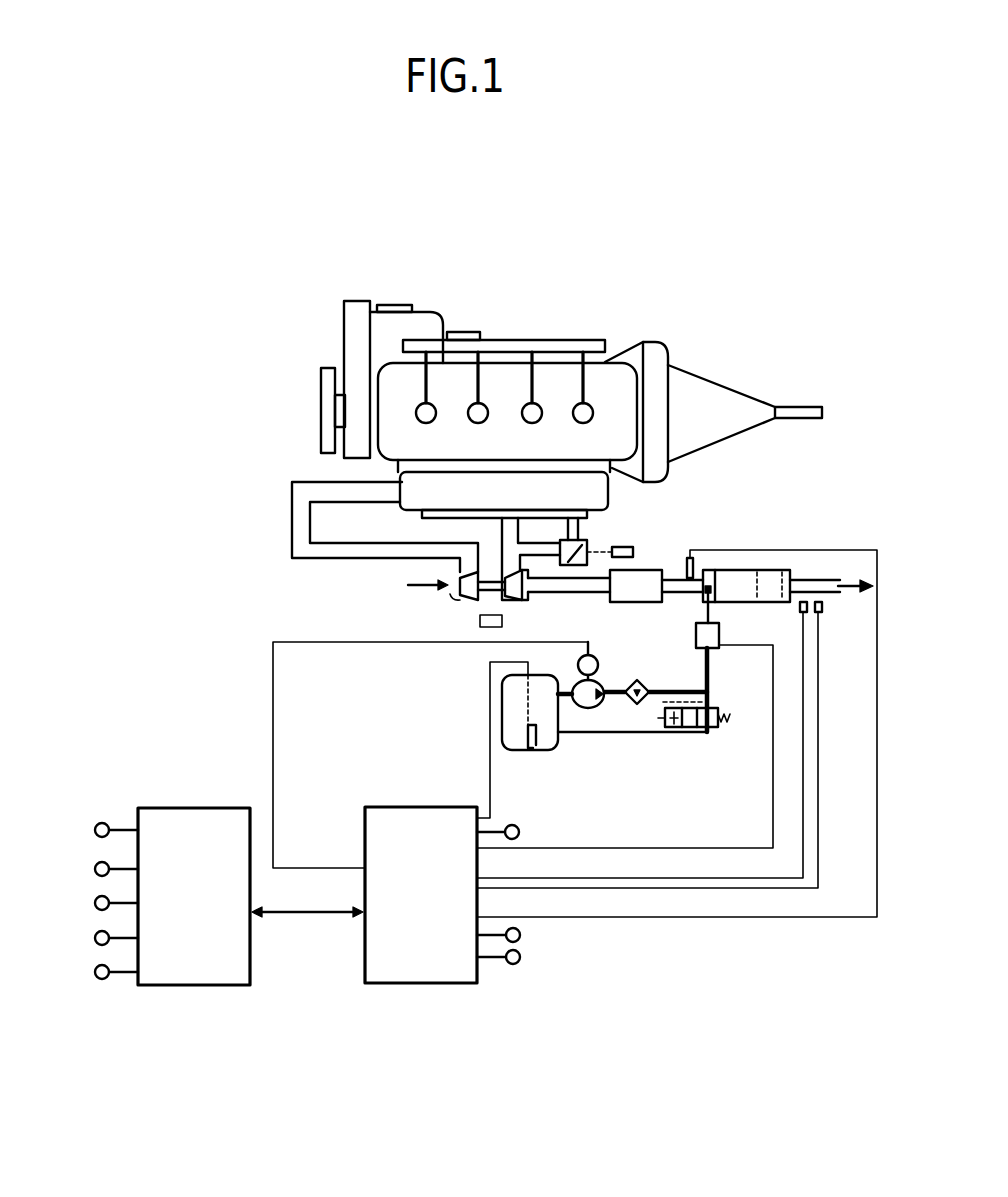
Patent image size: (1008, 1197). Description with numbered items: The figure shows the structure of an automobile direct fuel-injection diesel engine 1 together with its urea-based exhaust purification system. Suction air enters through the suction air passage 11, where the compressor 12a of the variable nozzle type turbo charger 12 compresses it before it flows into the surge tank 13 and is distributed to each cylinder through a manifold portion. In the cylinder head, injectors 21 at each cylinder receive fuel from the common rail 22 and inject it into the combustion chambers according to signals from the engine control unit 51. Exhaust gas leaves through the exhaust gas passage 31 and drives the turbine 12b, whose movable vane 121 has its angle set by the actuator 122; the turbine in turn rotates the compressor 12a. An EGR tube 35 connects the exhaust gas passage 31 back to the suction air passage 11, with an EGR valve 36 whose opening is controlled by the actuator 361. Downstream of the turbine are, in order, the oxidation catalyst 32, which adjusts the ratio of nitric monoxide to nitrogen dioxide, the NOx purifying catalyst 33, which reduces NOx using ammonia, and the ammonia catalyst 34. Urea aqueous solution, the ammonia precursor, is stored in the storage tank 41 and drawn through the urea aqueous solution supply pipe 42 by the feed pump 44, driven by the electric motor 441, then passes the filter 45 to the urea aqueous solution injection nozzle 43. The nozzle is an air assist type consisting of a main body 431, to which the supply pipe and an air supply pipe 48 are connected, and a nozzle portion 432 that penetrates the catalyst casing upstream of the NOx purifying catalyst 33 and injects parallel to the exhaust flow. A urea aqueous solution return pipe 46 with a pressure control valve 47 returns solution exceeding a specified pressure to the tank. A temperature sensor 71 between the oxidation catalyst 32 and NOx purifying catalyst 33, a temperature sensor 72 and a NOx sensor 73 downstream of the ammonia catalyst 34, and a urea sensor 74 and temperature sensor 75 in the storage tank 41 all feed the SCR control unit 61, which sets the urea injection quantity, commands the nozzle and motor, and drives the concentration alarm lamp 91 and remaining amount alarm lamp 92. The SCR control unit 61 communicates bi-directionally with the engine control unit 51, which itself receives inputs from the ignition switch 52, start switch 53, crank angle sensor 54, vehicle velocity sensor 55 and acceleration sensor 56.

The engine 1 is at (657, 296).
The suction air passage 11 is at (318, 481).
The variable nozzle type turbo charger 12 is at (491, 580).
The compressor 12a is at (463, 598).
The turbine 12b is at (528, 597).
The movable vane 121 is at (515, 602).
The actuator 122 is at (490, 605).
The surge tank 13 is at (418, 508).
The injector 21 is at (580, 419).
The common rail 22 is at (572, 342).
The exhaust gas passage 31 is at (584, 594).
The oxidation catalyst 32 is at (634, 570).
The NOx purifying catalyst 33 is at (740, 604).
The ammonia catalyst 34 is at (768, 566).
The EGR tube 35 is at (524, 548).
The EGR valve 36 is at (588, 544).
The actuator 361 is at (613, 547).
The storage tank 41 is at (538, 750).
The urea aqueous solution supply pipe 42 is at (712, 666).
The urea aqueous solution injection nozzle 43 is at (718, 652).
The main body 431 is at (696, 640).
The nozzle portion 432 is at (707, 598).
The feed pump 44 is at (599, 688).
The electric motor 441 is at (596, 659).
The filter 45 is at (645, 685).
The urea aqueous solution return pipe 46 is at (637, 734).
The pressure control valve 47 is at (720, 710).
The air supply pipe 48 is at (722, 641).
The engine control unit 51 is at (213, 986).
The ignition switch 52 is at (95, 830).
The start switch 53 is at (95, 869).
The crank angle sensor 54 is at (95, 903).
The vehicle velocity sensor 55 is at (95, 938).
The acceleration sensor 56 is at (95, 972).
The SCR control unit 61 is at (445, 984).
The temperature sensor 71 is at (688, 568).
The temperature sensor 72 is at (802, 612).
The NOx sensor 73 is at (821, 612).
The urea sensor 74 is at (526, 750).
The temperature sensor 75 is at (518, 826).
The concentration alarm lamp 91 is at (521, 935).
The remaining amount alarm lamp 92 is at (521, 957).